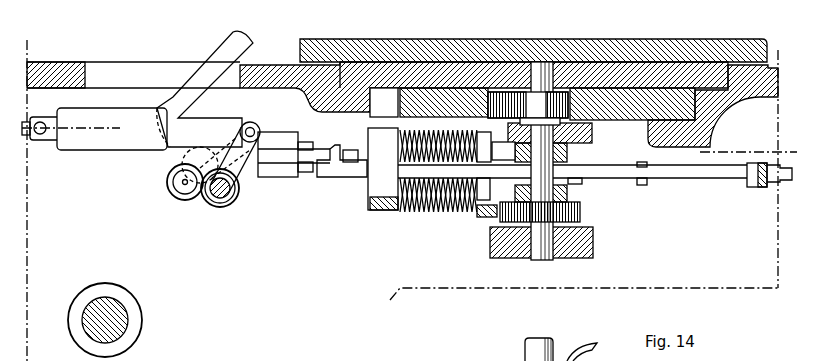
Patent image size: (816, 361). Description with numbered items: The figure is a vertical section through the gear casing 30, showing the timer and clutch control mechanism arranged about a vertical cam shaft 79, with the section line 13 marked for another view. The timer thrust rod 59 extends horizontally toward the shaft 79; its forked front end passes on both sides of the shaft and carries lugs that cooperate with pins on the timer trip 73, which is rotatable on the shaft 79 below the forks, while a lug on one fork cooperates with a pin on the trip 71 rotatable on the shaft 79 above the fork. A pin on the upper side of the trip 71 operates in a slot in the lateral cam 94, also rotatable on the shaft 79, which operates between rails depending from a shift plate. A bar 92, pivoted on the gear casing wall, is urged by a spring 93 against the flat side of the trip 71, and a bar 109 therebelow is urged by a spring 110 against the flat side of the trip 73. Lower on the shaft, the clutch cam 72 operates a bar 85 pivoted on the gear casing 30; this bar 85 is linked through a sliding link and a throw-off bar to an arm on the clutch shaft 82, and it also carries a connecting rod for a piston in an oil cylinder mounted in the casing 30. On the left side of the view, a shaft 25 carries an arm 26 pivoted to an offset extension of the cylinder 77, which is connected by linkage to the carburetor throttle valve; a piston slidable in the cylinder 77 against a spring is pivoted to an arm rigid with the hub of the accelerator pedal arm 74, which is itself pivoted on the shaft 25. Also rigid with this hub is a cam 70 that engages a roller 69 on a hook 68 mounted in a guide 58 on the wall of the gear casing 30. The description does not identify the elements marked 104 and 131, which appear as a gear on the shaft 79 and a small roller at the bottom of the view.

The section line 13 is at (27, 127).
The shaft 25 is at (220, 198).
The arm 26 is at (247, 165).
The gear casing 30 is at (265, 64).
The guide 58 is at (268, 135).
The timer thrust rod 59 is at (757, 187).
The hook 68 is at (280, 153).
The roller 69 is at (180, 185).
The cam 70 is at (240, 186).
The trip 71 is at (567, 153).
The clutch cam 72 is at (572, 214).
The timer trip 73 is at (567, 196).
The accelerator pedal arm 74 is at (185, 85).
The cylinder 77 is at (72, 142).
The vertical cam shaft 79 is at (638, 107).
The clutch shaft 82 is at (115, 320).
The bar 85 is at (498, 220).
The bar 92 is at (503, 151).
The spring 93 is at (397, 135).
The lateral cam 94 is at (592, 133).
The gear 104 is at (568, 105).
The bar 109 is at (485, 216).
The spring 110 is at (442, 210).
The roller 131 is at (528, 355).